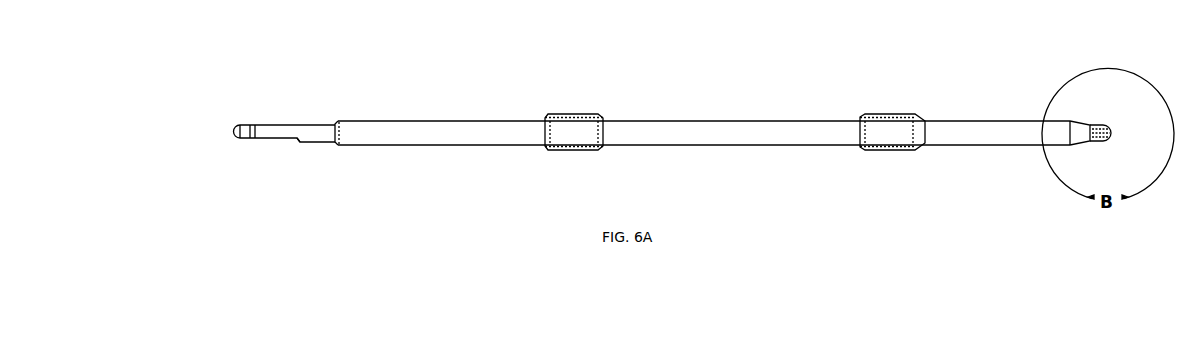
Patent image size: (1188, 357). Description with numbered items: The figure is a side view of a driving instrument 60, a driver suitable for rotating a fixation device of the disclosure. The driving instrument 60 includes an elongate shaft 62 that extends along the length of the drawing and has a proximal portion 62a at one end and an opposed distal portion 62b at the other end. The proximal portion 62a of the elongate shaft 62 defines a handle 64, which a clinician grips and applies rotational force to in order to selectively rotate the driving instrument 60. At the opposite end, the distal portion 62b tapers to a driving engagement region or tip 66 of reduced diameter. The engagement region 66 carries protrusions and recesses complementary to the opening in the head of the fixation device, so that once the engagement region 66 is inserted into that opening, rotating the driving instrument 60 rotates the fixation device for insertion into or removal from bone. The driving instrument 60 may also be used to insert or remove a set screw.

The driving instrument 60 is at (687, 88).
The elongate shaft 62 is at (783, 133).
The proximal portion 62a is at (273, 132).
The distal portion 62b is at (1082, 138).
The handle 64 is at (305, 133).
The engagement region 66 is at (1108, 115).